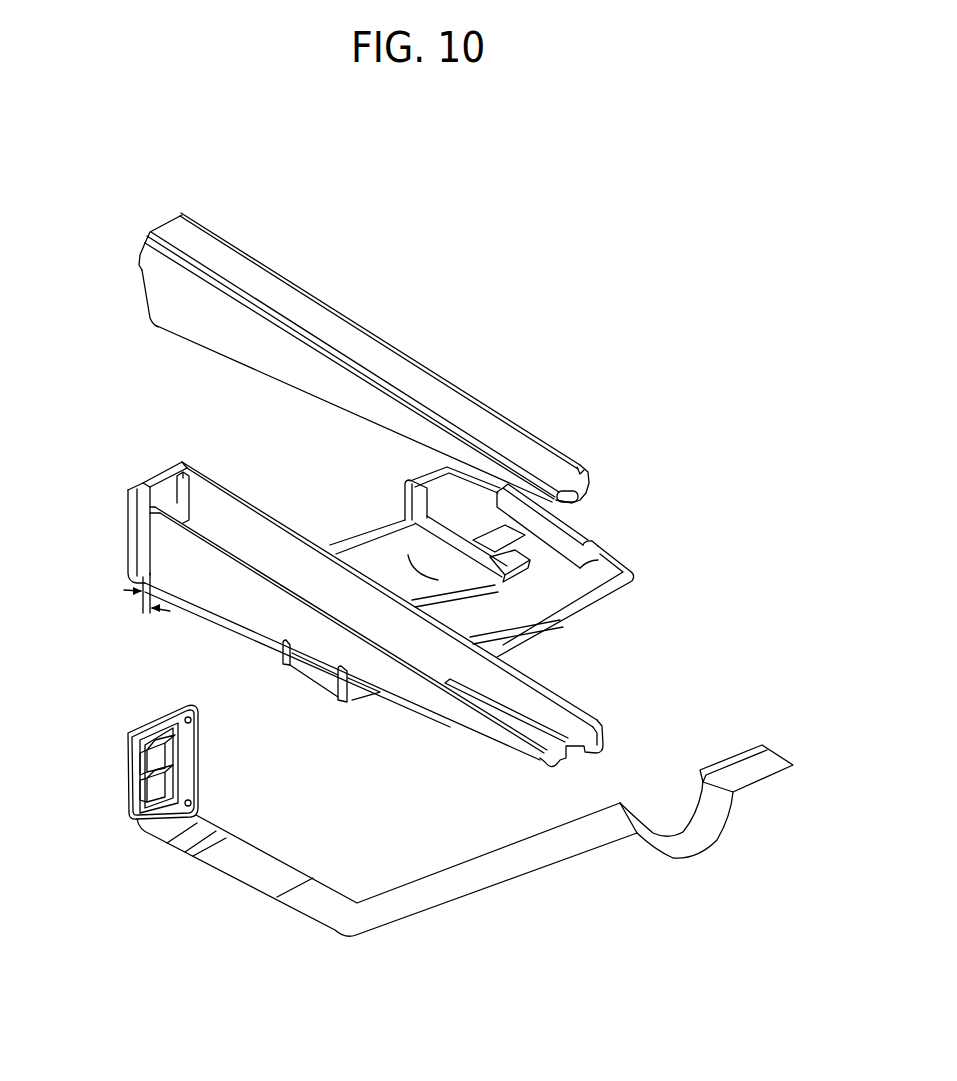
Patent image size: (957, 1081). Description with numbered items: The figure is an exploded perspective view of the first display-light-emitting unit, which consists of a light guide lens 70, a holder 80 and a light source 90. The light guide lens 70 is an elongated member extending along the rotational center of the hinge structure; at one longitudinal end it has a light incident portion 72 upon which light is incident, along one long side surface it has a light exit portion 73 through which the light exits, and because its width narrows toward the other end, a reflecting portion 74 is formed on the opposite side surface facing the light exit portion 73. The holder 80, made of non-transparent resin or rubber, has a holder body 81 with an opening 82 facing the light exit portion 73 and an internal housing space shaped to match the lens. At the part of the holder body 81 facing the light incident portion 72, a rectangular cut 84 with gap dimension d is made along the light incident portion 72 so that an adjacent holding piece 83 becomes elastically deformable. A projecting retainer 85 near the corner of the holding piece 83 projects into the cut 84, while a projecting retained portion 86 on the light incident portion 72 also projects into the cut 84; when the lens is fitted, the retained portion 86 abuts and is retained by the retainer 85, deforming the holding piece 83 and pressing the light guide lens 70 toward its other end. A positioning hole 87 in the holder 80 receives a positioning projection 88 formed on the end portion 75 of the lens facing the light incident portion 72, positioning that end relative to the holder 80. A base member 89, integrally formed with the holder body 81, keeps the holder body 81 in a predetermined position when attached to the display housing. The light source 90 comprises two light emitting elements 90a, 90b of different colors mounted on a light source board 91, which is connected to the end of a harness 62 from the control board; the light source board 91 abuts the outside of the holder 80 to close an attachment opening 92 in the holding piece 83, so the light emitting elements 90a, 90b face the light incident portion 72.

The harness 62 is at (505, 885).
The light guide lens 70 is at (452, 365).
The light incident portion 72 is at (147, 297).
The light exit portion 73 is at (350, 333).
The reflecting portion 74 is at (325, 403).
The portion facing the light incident portion 75 is at (580, 468).
The holder 80 is at (148, 628).
The holder body 81 is at (258, 610).
The opening 82 is at (268, 535).
The holding piece 83 is at (148, 480).
The cut 84 is at (142, 550).
The retainer 85 is at (130, 490).
The retained portion 86 is at (128, 262).
The positioning hole 87 is at (576, 756).
The positioning projection 88 is at (580, 502).
The base member 89 is at (510, 605).
The light source 90 is at (120, 770).
The light emitting element 90a is at (172, 752).
The light emitting element 90b is at (172, 780).
The light source board 91 is at (128, 797).
The attachment opening 92 is at (182, 474).